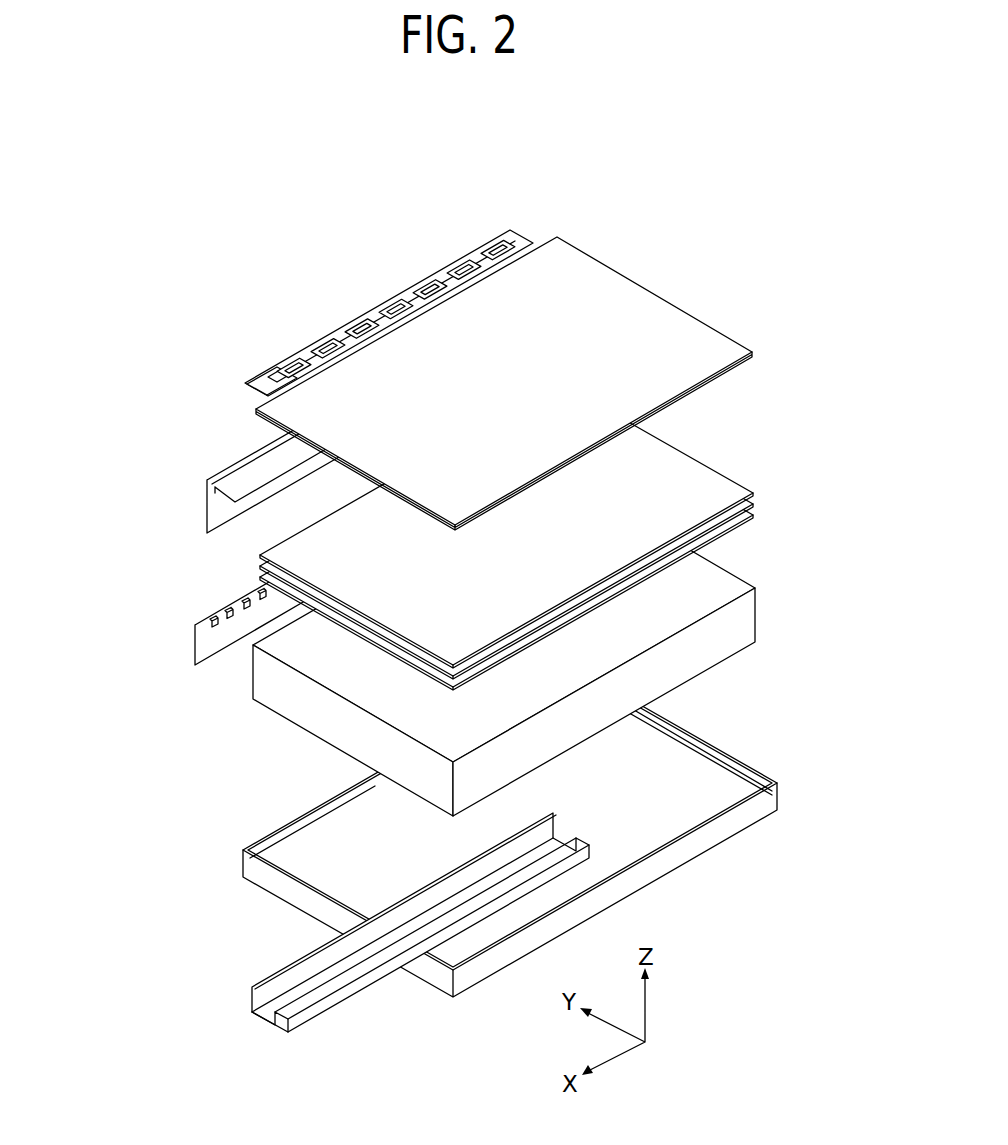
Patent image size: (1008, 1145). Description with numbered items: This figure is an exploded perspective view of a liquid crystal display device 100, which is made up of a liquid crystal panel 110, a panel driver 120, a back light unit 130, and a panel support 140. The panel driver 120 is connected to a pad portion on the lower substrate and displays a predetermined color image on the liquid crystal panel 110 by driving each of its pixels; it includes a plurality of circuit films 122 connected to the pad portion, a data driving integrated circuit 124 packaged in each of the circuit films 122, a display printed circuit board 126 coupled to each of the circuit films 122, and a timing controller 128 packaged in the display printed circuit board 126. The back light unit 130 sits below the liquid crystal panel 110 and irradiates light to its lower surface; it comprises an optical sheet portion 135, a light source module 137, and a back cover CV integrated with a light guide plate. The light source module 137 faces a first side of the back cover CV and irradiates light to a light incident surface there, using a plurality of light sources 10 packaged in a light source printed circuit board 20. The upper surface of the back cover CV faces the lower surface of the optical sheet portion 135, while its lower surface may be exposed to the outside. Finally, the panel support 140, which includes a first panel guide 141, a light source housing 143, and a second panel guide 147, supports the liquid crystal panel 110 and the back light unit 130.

The liquid crystal display device 100 is at (199, 238).
The liquid crystal panel 110 is at (648, 303).
The panel driver 120 is at (158, 345).
The circuit films 122 is at (262, 398).
The data driving integrated circuit 124 is at (270, 388).
The display printed circuit board 126 is at (293, 361).
The timing controller 128 is at (272, 375).
The back light unit 130 is at (78, 563).
The optical sheet portion 135 is at (256, 553).
The light source module 137 is at (132, 603).
The light sources 10 is at (208, 620).
The light source printed circuit board 20 is at (200, 652).
The back cover integrated with a light guide plate CV is at (283, 680).
The panel support 140 is at (832, 687).
The first panel guide 141 is at (225, 510).
The second panel guide 147 is at (692, 847).
The light source housing 143 is at (570, 858).